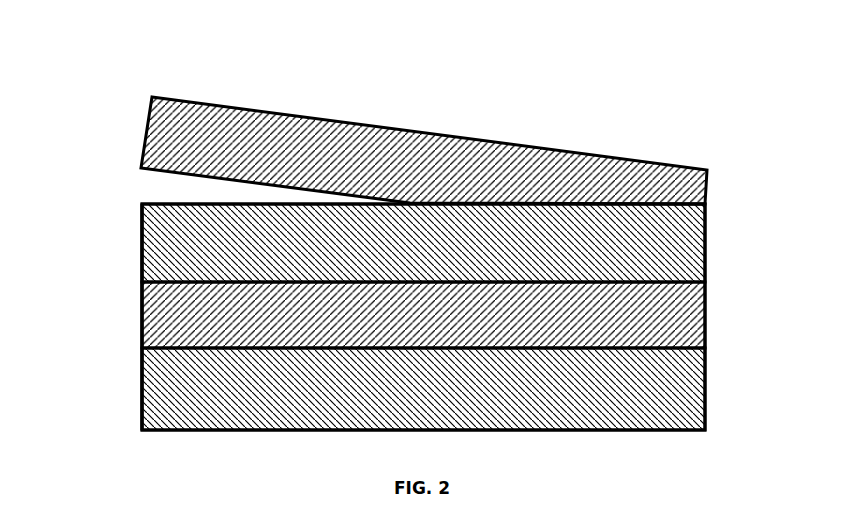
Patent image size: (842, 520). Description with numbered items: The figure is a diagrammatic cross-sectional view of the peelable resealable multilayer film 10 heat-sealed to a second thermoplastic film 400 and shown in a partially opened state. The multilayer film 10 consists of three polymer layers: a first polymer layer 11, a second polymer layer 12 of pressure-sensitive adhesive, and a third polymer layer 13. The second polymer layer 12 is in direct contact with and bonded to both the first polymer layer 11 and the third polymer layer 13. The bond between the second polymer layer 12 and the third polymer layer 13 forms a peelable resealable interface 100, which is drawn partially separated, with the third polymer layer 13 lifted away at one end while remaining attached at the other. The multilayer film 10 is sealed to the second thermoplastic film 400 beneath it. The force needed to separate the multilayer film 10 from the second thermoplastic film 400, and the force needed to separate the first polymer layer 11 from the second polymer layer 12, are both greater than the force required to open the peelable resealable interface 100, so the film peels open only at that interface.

The peelable resealable multilayer film 10 is at (423, 113).
The first polymer layer 11 is at (142, 307).
The second polymer layer 12 is at (707, 232).
The third polymer layer 13 is at (143, 143).
The peelable resealable interface 100 is at (148, 178).
The second thermoplastic film 400 is at (707, 385).